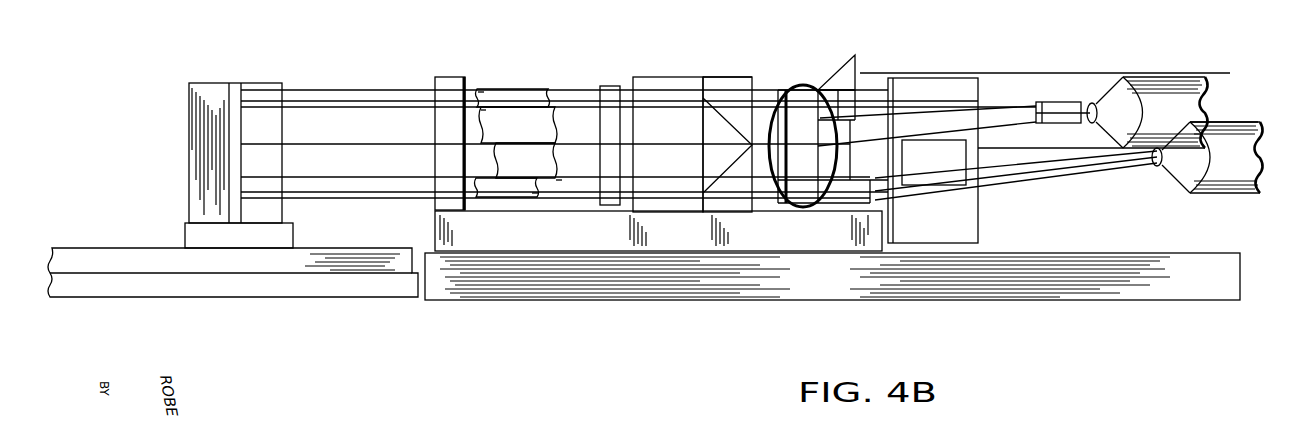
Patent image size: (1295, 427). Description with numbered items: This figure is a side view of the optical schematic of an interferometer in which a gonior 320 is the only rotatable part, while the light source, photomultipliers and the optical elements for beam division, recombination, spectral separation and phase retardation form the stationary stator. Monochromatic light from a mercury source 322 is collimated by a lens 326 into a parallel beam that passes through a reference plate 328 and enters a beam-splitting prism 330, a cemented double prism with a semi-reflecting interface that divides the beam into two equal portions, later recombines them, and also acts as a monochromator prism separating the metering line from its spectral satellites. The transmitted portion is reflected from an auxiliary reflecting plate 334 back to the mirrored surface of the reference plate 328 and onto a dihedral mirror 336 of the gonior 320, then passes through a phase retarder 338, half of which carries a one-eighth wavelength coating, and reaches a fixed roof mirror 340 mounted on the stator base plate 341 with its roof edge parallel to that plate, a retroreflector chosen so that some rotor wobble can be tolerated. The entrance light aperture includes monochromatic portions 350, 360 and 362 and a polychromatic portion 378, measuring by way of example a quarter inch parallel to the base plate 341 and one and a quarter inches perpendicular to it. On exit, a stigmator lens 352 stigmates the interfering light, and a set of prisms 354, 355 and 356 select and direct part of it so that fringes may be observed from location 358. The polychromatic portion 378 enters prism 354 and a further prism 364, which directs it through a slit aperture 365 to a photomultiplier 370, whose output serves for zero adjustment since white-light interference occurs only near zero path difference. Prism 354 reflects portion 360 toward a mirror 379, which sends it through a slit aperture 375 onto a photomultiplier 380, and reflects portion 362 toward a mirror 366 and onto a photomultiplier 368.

The gonior 320 is at (290, 271).
The mercury 198 source 322 is at (950, 212).
The lens 326 is at (837, 160).
The reference plate 328 is at (752, 77).
The beam-splitting prism 330 is at (686, 131).
The auxiliary reflecting plate 334 is at (450, 77).
The dihedral mirror 336 is at (258, 244).
The phase retarder 338 is at (600, 130).
The roof mirror 340 is at (738, 143).
The stator base plate 341 is at (694, 240).
The monochromatic portion of entrance aperture 350 is at (560, 107).
The stigmator lens 352 is at (790, 88).
The prism 354 is at (853, 102).
The prism 355 is at (850, 123).
The prism 356 is at (846, 72).
The observation location 358 is at (1226, 74).
The monochromatic portion of light beam 360 is at (547, 96).
The monochromatic portion of light beam 362 is at (482, 107).
The prism 364 is at (843, 192).
The slit aperture 365 is at (1157, 166).
The mirror 366 is at (952, 170).
The photomultiplier 368 is at (1261, 119).
The photomultiplier 370 is at (1256, 154).
The slit aperture 375 is at (1088, 121).
The polychromatic portion of aperture 378 is at (478, 92).
The mirror 379 is at (1071, 102).
The photomultiplier 380 is at (1195, 102).